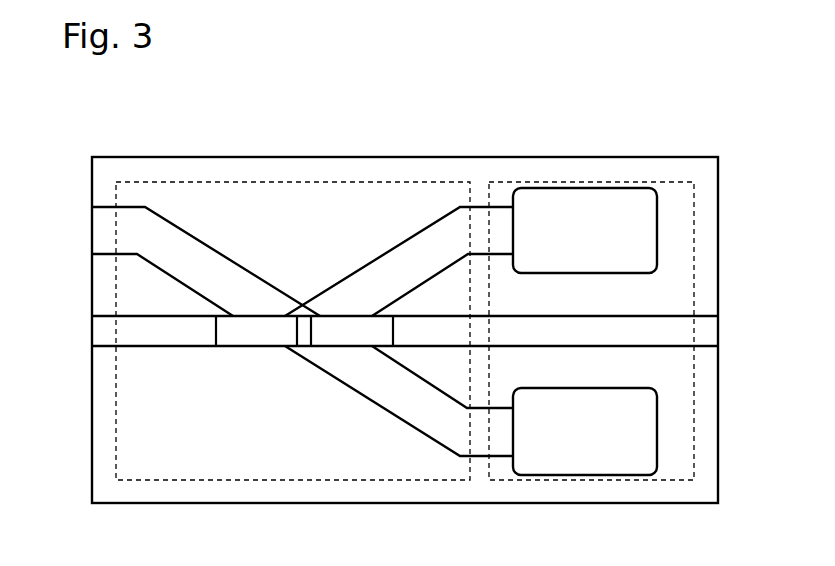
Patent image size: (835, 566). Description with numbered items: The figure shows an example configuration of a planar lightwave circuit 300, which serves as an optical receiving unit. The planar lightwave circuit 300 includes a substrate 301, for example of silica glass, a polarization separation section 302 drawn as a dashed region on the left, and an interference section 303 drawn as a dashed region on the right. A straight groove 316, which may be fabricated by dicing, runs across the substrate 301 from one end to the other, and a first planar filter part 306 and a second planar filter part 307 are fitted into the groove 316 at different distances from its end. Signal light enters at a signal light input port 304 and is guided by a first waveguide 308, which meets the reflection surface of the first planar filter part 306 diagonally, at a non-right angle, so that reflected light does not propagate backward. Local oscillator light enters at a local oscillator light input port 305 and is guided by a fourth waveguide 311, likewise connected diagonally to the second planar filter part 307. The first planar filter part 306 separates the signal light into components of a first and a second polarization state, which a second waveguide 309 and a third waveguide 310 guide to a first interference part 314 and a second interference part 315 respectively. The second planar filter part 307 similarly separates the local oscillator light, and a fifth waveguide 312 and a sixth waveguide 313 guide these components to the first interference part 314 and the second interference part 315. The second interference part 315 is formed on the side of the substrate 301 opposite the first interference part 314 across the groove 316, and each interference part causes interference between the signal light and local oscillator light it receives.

The planar lightwave circuit 300 is at (420, 125).
The substrate 301 is at (160, 157).
The polarization separation section 302 is at (300, 182).
The interference section 303 is at (673, 182).
The signal light input port 304 is at (92, 207).
The local oscillator light input port 305 is at (92, 254).
The first planar filter part 306 is at (310, 357).
The second planar filter part 307 is at (229, 346).
The first waveguide 308 is at (217, 251).
The second waveguide 309 is at (422, 283).
The third waveguide 310 is at (422, 380).
The fourth waveguide 311 is at (163, 275).
The fifth waveguide 312 is at (337, 283).
The sixth waveguide 313 is at (337, 385).
The first interference part 314 is at (657, 225).
The second interference part 315 is at (657, 427).
The groove 316 is at (96, 330).